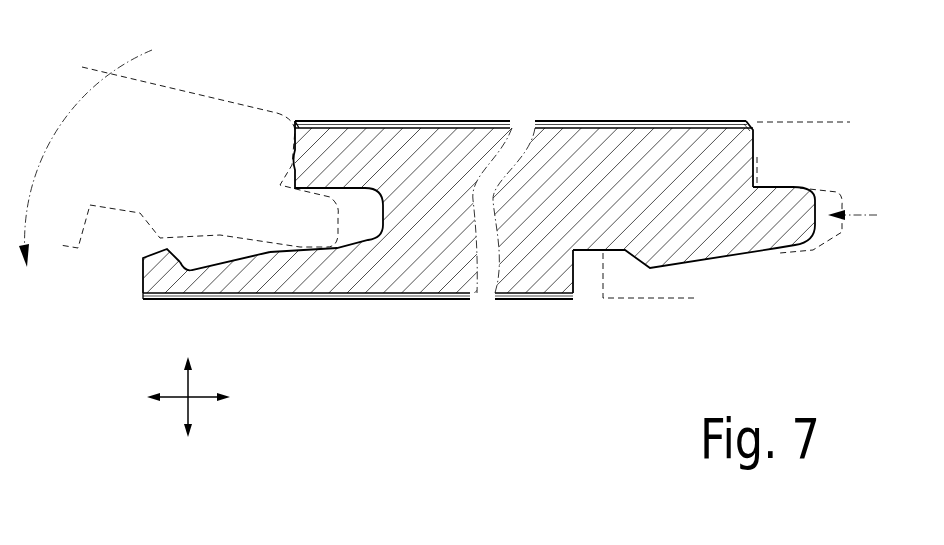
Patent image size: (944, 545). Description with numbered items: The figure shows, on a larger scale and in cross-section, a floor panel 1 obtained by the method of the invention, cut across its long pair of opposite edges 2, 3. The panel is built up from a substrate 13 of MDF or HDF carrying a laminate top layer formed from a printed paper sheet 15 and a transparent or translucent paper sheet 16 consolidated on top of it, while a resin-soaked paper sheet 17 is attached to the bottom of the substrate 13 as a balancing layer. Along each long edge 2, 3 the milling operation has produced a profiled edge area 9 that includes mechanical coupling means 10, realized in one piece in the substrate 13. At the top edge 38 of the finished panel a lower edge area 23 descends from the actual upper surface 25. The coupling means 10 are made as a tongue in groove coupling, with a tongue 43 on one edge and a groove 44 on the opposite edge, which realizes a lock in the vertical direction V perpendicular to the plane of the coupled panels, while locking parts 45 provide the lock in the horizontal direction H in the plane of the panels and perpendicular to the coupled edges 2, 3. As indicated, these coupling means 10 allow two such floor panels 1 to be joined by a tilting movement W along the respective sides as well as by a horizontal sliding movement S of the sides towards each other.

The floor panel 1 is at (472, 214).
The long edge 2 is at (805, 168).
The long edge 3 is at (262, 198).
The profiled edge area 9 is at (123, 167).
The mechanical coupling means 10 is at (120, 292).
The substrate 13 is at (422, 245).
The printed paper sheet 15 is at (452, 121).
The transparent or translucent paper sheet 16 is at (392, 121).
The paper sheet 17 is at (272, 297).
The lower edge area 23 is at (752, 122).
The upper surface 25 is at (552, 122).
The top edge 38 is at (310, 125).
The tongue 43 is at (735, 220).
The groove 44 is at (240, 226).
The locking parts 45 is at (160, 262).
The tilting movement W is at (113, 72).
The horizontal sliding movement S is at (854, 200).
The vertical direction V is at (190, 388).
The horizontal direction H is at (177, 398).